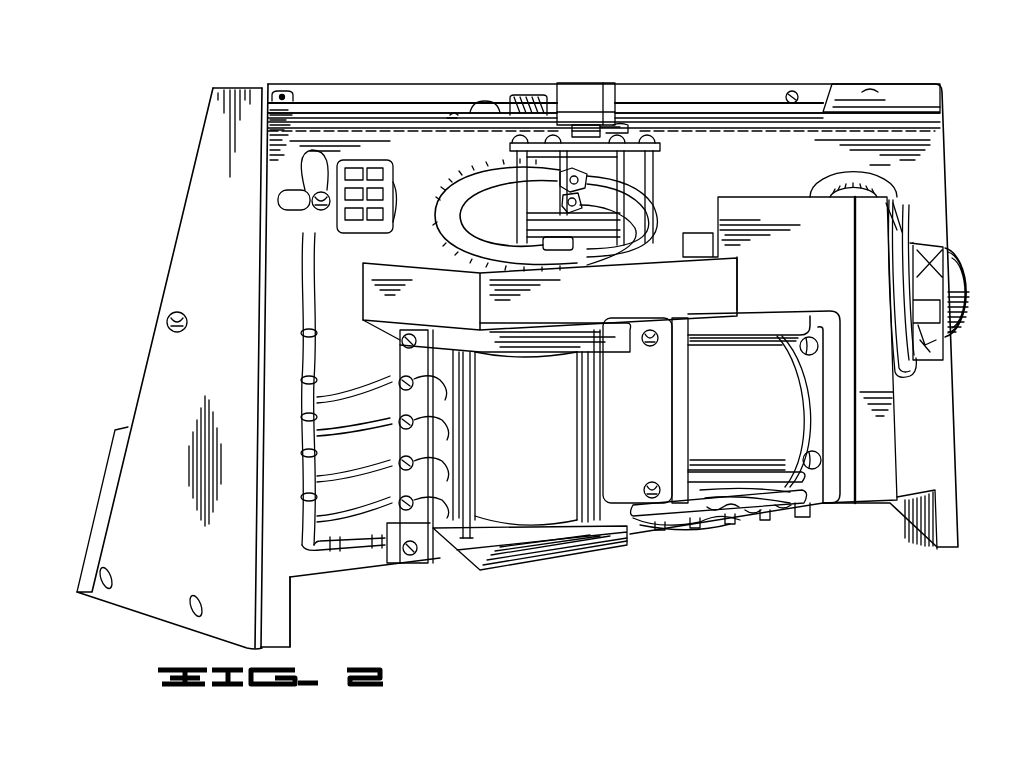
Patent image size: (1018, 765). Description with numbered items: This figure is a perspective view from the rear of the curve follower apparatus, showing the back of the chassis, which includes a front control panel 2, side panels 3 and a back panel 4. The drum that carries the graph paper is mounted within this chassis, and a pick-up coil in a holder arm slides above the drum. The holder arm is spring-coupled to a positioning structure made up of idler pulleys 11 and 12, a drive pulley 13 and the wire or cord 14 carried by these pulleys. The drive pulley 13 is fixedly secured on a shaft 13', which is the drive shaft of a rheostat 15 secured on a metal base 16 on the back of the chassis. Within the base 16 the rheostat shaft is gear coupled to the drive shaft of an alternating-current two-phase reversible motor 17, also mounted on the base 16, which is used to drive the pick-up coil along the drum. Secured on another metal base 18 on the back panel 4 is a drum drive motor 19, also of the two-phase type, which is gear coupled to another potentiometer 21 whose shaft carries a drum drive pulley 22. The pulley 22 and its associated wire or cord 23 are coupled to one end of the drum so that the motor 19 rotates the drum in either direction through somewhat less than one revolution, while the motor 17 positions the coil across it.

The front control panel 2 is at (932, 94).
The side panels 3 is at (170, 370).
The back panel 4 is at (315, 566).
The idler pulley 11 is at (893, 98).
The idler pulley 12 is at (312, 113).
The drive pulley 13 is at (588, 95).
The shaft 13' is at (633, 93).
The wire or cord 14 is at (700, 103).
The rheostat 15 is at (545, 168).
The metal base 16 is at (360, 289).
The A.-C. two-phase reversible motor 17 is at (527, 512).
The metal base 18 is at (768, 197).
The drum drive motor 19 is at (743, 460).
The potentiometer 21 is at (945, 248).
The drum drive pulley 22 is at (966, 296).
The wire or cord 23 is at (958, 272).